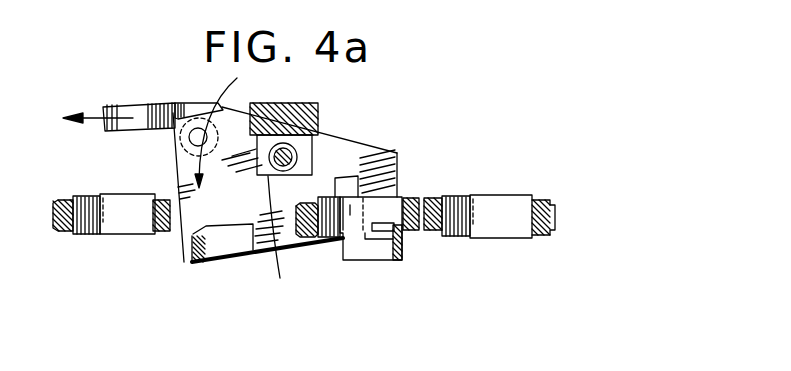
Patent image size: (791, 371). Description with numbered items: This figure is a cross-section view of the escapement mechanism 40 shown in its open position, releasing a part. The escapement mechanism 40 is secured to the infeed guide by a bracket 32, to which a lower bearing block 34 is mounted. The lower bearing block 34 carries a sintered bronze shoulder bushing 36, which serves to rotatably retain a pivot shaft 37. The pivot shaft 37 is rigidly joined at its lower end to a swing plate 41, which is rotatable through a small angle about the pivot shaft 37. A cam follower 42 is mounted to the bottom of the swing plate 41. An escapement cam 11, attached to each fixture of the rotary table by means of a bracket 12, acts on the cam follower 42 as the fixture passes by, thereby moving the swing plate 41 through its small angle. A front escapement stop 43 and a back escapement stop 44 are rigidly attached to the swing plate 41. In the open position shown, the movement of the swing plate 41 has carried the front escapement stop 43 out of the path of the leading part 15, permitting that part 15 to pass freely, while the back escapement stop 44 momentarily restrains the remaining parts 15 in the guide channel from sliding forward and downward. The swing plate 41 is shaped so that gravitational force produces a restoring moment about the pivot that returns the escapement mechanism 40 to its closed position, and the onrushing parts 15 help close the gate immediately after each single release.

The escapement cam 11 is at (189, 103).
The bracket 12 is at (130, 108).
The part 15 is at (130, 193).
The bracket 32 is at (318, 112).
The lower bearing block 34 is at (275, 242).
The sintered bronze shoulder bushing 36 is at (312, 160).
The pivot shaft 37 is at (296, 150).
The escapement mechanism 40 is at (322, 240).
The swing plate 41 is at (203, 205).
The cam follower 42 is at (220, 116).
The front escapement stop 43 is at (185, 263).
The back escapement stop 44 is at (402, 247).